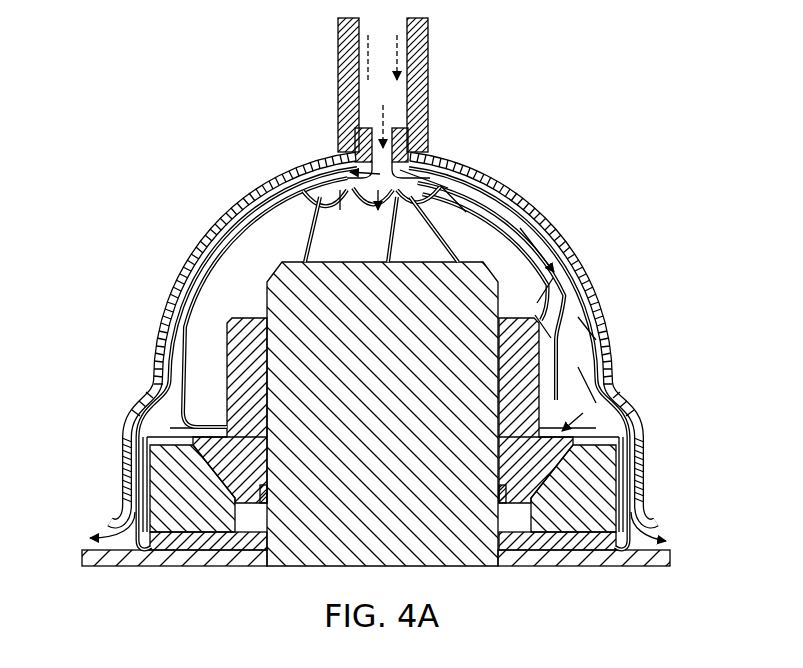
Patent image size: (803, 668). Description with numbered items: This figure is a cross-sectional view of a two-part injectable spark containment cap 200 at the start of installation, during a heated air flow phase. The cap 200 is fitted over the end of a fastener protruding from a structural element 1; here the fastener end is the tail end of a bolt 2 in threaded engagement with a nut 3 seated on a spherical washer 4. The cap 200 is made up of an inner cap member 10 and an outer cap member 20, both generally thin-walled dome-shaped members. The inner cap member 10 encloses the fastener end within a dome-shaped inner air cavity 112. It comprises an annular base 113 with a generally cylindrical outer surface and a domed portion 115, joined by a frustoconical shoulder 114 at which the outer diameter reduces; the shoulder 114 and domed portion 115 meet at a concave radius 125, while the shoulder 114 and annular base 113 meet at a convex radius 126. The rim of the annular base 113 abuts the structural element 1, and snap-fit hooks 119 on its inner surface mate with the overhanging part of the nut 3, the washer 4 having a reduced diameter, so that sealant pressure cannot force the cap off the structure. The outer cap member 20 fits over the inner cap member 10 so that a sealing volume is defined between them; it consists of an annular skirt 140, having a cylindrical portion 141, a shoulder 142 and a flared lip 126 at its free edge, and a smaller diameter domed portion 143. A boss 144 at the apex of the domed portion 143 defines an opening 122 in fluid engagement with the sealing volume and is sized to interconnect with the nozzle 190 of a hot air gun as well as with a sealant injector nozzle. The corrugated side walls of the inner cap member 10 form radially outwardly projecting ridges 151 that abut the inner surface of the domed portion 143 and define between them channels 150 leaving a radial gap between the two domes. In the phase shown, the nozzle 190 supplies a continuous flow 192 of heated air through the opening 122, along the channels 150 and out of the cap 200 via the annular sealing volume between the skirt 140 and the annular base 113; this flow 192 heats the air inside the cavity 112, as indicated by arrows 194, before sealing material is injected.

The structural element 1 is at (100, 556).
The bolt 2 is at (282, 298).
The nut 3 is at (240, 370).
The spherical washer 4 is at (190, 542).
The inner cap member 10 is at (586, 290).
The outer cap member 20 is at (583, 252).
The inner air cavity 112 is at (370, 256).
The annular base 113 is at (125, 473).
The frustoconical shoulder 114 is at (137, 422).
The domed portion 115 is at (170, 325).
The snap-fit projecting hooks 119 is at (138, 543).
The opening 122 is at (388, 128).
The concave radius 125 is at (157, 390).
The convex radius 126 is at (145, 437).
The annular skirt 140 is at (645, 485).
The cylindrical portion 141 is at (133, 495).
The shoulder 142 is at (140, 402).
The domed portion 143 is at (200, 248).
The boss 144 is at (406, 146).
The channels 150 is at (534, 252).
The ridges 151 is at (527, 247).
The nozzle 190 is at (430, 58).
The continuous flow of heated air 192 is at (590, 320).
The arrows 194 is at (468, 213).
The two-part injectable cap 200 is at (377, 380).